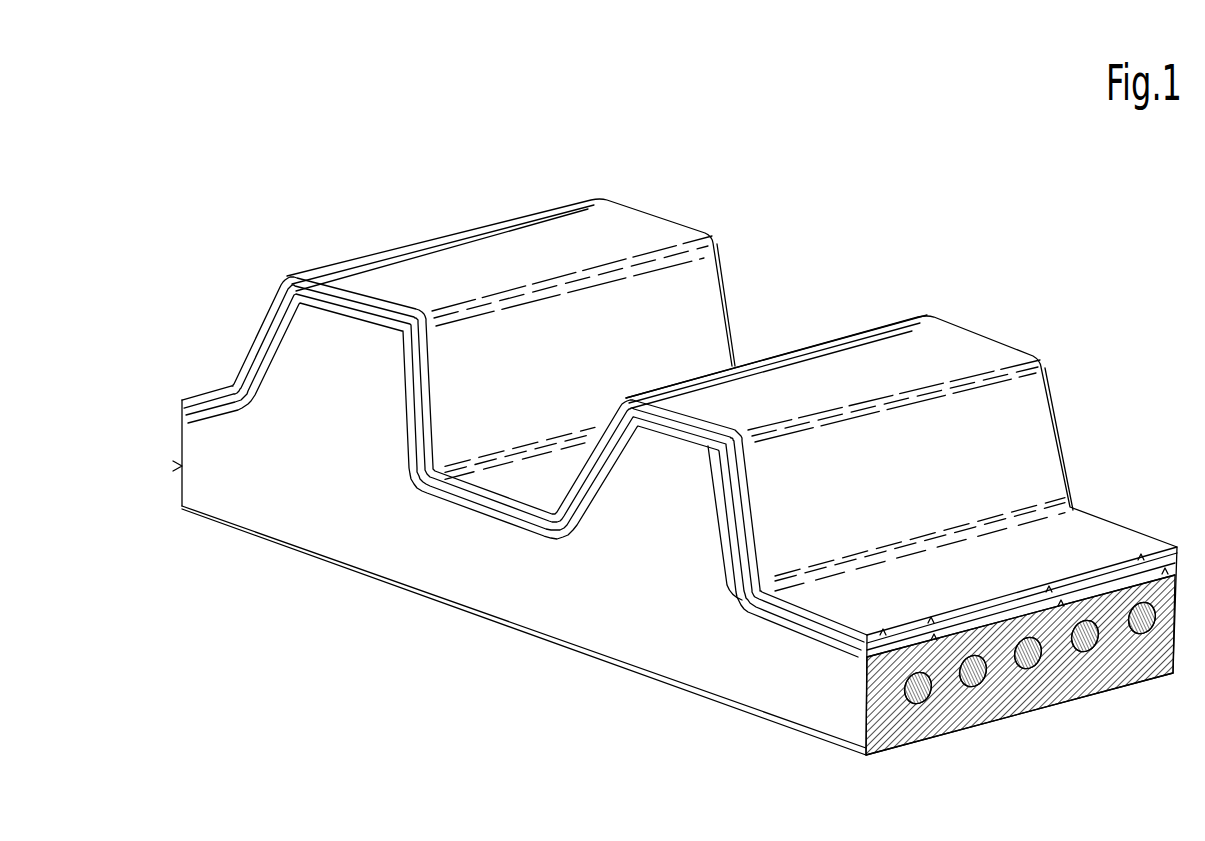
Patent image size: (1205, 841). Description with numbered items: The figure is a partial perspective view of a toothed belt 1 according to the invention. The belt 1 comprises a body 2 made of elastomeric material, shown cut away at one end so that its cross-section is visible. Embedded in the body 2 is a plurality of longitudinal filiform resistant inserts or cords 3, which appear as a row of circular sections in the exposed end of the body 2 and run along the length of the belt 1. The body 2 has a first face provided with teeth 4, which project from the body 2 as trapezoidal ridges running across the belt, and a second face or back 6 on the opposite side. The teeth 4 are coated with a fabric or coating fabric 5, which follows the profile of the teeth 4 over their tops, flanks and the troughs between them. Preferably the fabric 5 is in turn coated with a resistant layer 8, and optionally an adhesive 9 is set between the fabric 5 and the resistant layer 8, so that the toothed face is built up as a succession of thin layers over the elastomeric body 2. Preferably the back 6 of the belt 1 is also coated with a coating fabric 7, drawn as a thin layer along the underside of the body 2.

The toothed belt 1 is at (286, 123).
The body 2 is at (238, 481).
The cords 3 is at (932, 700).
The teeth 4 is at (647, 480).
The coating fabric 5 is at (600, 425).
The back 6 is at (423, 597).
The coating fabric 7 is at (322, 558).
The resistant layer 8 is at (737, 450).
The adhesive 9 is at (688, 427).